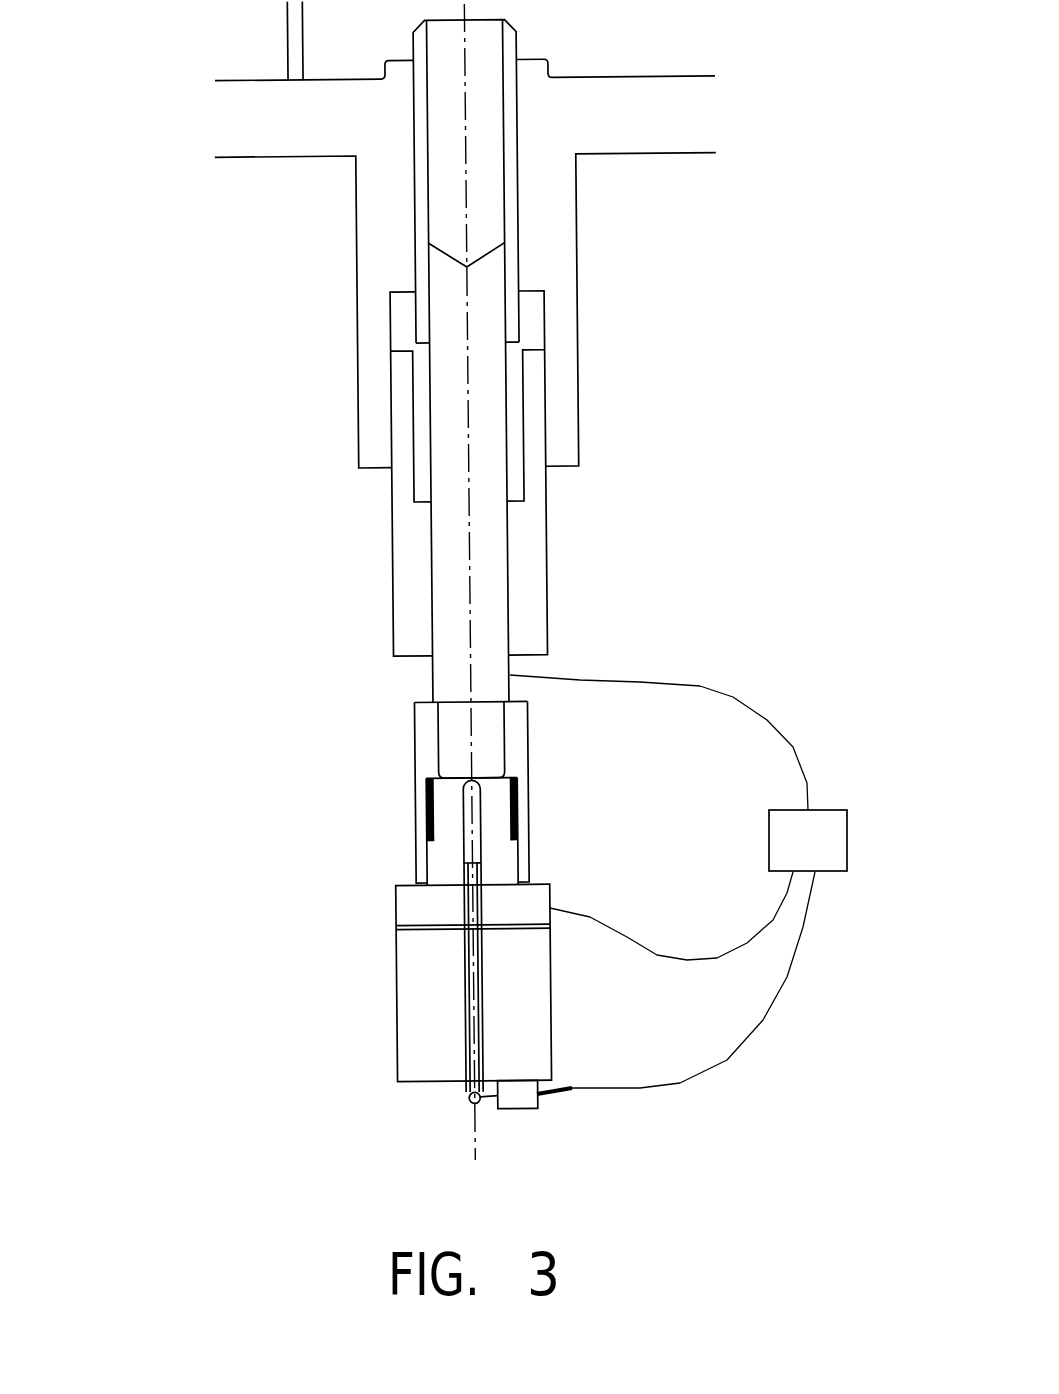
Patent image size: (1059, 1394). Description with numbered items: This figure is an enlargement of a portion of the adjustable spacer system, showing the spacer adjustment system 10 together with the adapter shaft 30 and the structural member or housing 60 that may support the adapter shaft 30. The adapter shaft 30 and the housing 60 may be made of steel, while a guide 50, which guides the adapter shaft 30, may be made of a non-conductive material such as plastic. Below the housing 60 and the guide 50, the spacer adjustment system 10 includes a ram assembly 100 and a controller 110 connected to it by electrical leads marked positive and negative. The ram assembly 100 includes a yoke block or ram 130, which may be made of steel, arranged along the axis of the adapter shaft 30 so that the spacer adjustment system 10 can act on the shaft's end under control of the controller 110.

The spacer adjustment system 10 is at (482, 580).
The adapter shaft 30 is at (372, 360).
The guide 50 is at (527, 473).
The housing 60 is at (675, 131).
The ram assembly 100 is at (360, 695).
The controller 110 is at (678, 884).
The ram 130 is at (422, 1021).